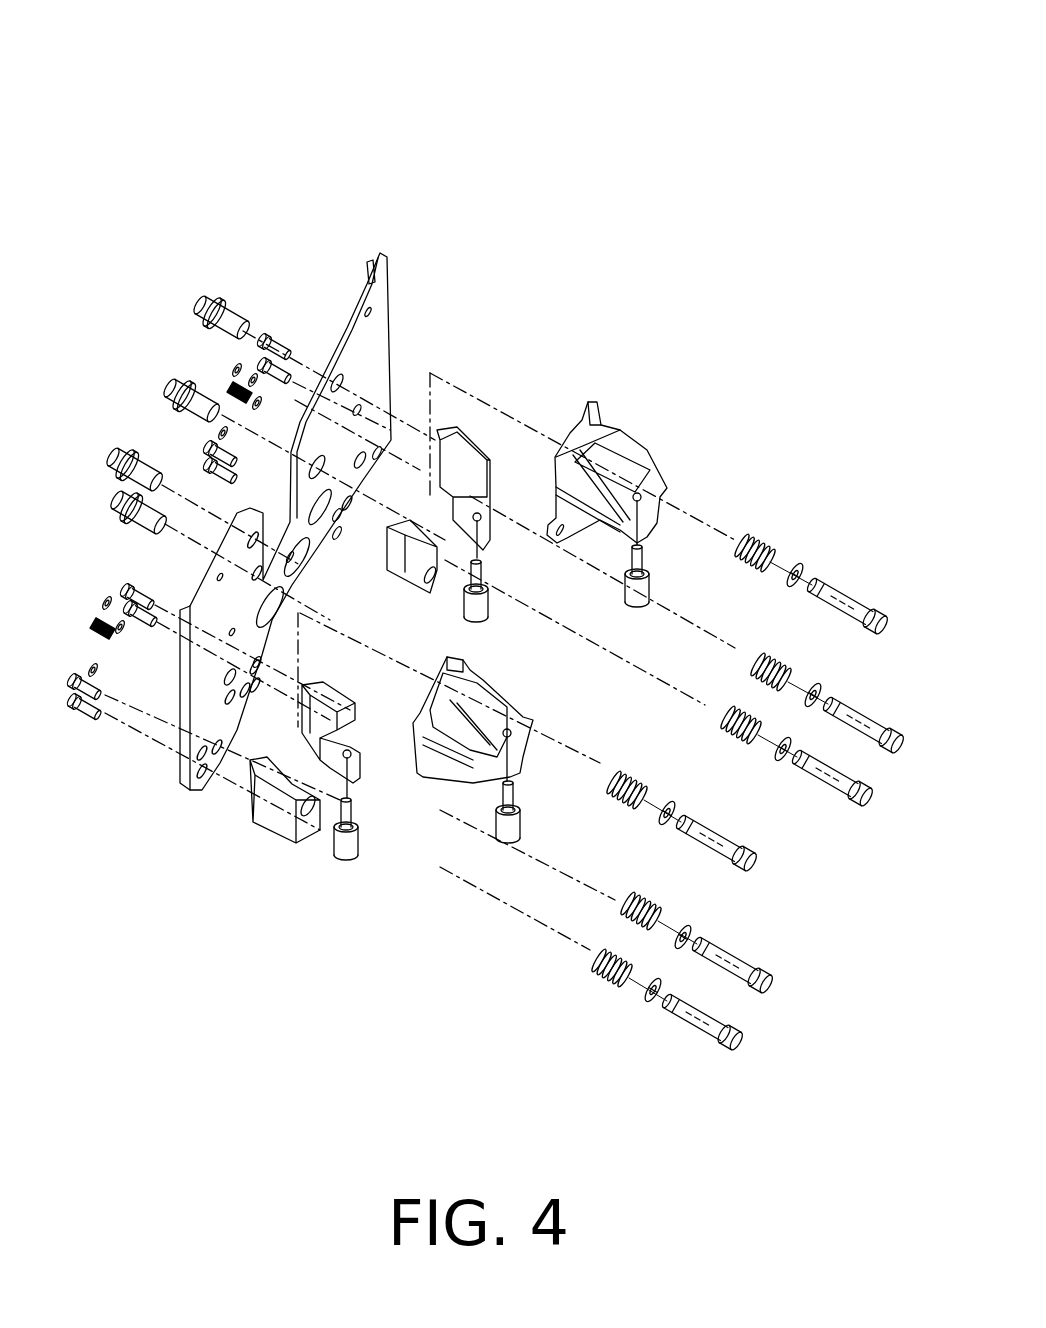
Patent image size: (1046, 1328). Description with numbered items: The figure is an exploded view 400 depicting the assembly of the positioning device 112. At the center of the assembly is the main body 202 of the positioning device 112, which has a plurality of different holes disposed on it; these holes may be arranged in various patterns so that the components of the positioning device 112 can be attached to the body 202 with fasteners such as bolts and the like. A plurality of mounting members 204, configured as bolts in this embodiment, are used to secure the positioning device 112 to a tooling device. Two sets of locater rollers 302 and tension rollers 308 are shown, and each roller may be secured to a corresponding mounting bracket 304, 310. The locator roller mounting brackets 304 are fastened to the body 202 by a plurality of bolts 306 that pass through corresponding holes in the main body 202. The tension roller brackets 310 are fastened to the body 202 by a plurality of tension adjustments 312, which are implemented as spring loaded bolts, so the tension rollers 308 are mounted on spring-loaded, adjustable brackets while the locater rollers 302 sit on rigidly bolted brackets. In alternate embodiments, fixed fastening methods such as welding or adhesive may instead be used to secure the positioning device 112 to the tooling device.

The exploded view 400 is at (750, 62).
The positioning device 112 is at (337, 190).
The main body 202 is at (385, 300).
The mounting members 204 is at (198, 300).
The locater rollers 302 is at (347, 858).
The locator roller mounting brackets 304 is at (265, 795).
The bolts 306 is at (104, 718).
The tension rollers 308 is at (525, 840).
The tension roller brackets 310 is at (423, 790).
The tension adjustments 312 is at (688, 1028).